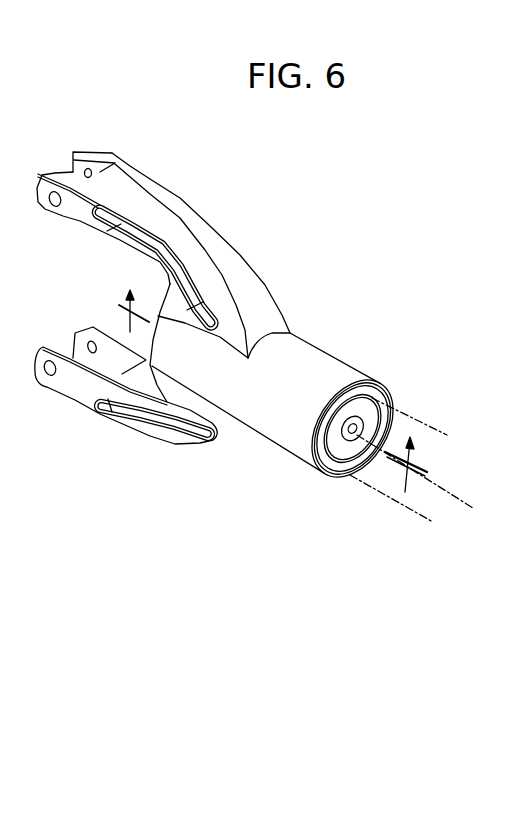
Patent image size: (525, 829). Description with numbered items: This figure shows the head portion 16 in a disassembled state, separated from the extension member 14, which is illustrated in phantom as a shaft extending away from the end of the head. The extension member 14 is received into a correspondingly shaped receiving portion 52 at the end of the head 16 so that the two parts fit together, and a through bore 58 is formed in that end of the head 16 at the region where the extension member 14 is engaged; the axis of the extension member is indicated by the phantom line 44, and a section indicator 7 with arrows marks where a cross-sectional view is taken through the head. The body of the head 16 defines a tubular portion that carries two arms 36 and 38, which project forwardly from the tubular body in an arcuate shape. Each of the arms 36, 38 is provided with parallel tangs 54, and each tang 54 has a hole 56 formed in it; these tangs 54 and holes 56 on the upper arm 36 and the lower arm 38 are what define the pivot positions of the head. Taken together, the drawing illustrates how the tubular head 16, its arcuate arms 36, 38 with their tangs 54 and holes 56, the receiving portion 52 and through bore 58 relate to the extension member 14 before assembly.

The section line 7- 7 is at (274, 389).
The extension member 14 is at (423, 451).
The head portion 16 is at (269, 378).
The arm 36 is at (163, 255).
The arm 38 is at (172, 445).
The axis 44 is at (430, 471).
The receiving portion 52 is at (352, 443).
The tangs 54 is at (111, 276).
The holes 56 is at (51, 261).
The through bore 58 is at (393, 416).